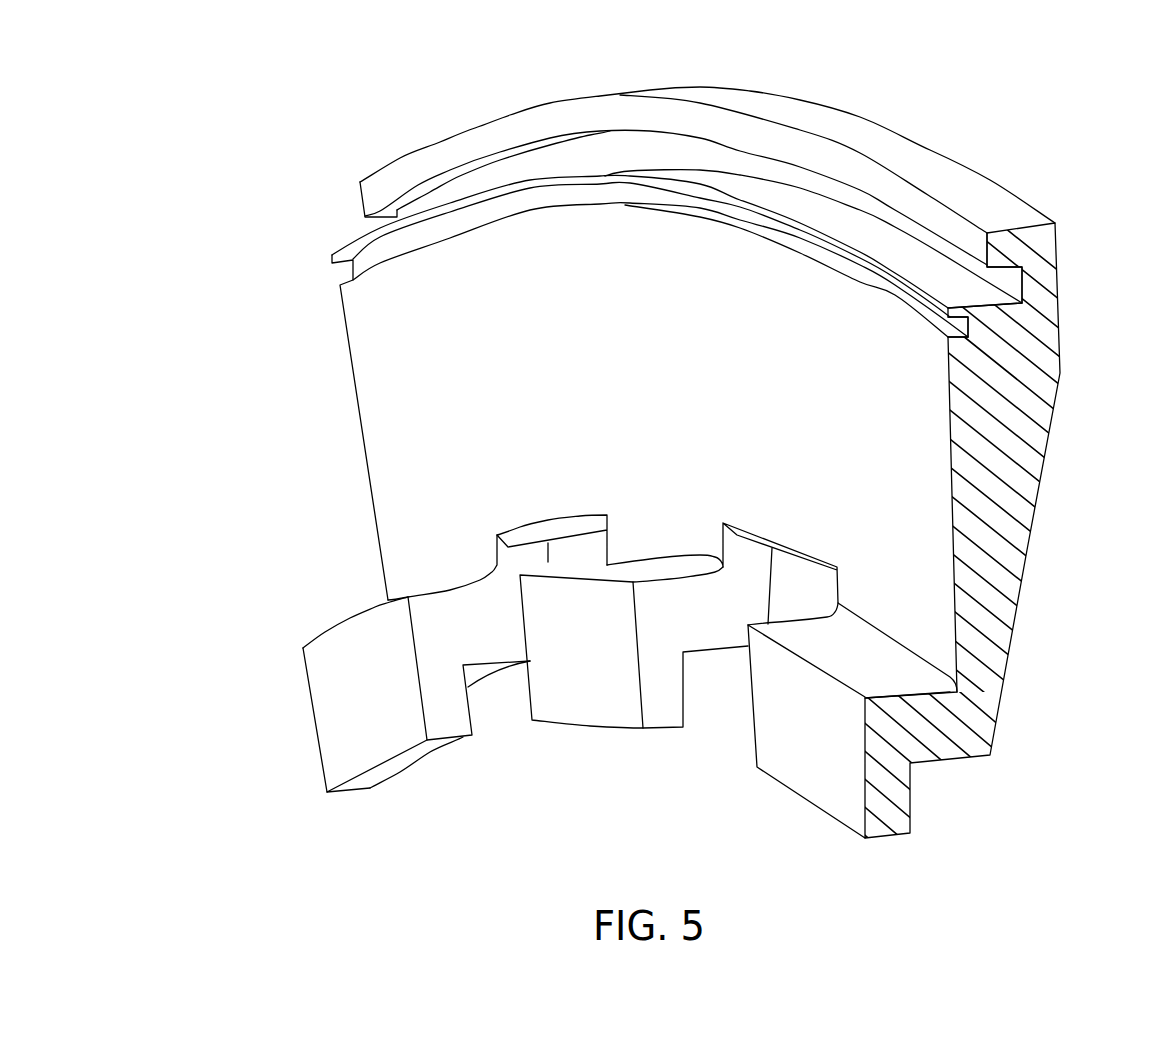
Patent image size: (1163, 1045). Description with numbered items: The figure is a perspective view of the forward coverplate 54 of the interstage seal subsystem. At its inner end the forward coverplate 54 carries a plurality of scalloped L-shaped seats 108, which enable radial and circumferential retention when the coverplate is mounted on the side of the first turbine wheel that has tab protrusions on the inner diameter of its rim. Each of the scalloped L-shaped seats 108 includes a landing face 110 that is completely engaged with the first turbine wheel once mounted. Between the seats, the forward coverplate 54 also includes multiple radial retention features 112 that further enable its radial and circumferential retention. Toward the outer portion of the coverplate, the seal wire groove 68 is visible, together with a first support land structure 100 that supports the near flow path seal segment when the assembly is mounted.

The forward coverplate 54 is at (1040, 101).
The seal wire groove 68 is at (590, 194).
The first support land structure 100 is at (805, 166).
The scalloped L-shaped seats 108 is at (347, 710).
The landing face 110 is at (622, 571).
The radial retention features 112 is at (787, 550).